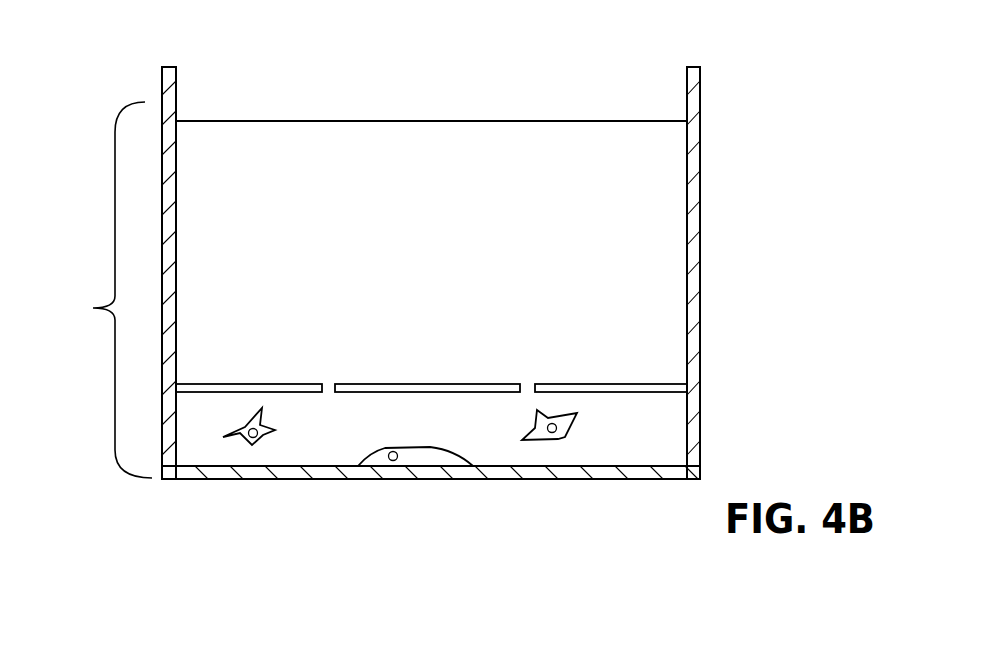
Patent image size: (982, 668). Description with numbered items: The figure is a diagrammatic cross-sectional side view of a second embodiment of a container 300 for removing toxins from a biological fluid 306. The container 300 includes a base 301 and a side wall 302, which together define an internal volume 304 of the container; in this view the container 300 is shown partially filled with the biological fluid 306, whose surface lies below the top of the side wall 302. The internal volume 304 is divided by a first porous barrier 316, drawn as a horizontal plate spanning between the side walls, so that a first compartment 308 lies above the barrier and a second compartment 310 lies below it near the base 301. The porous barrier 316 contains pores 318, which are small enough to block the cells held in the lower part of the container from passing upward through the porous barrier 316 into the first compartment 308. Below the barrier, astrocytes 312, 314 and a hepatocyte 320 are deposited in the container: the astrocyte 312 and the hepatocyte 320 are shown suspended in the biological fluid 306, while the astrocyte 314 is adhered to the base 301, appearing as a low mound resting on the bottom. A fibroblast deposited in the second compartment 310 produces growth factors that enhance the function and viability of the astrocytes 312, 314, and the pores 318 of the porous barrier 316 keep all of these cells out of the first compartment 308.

The container 300 is at (283, 75).
The base 301 is at (535, 479).
The side wall 302 is at (695, 242).
The internal volume 304 is at (96, 290).
The biological fluid 306 is at (408, 167).
The first compartment 308 is at (498, 232).
The second compartment 310 is at (318, 448).
The astrocyte 312 is at (565, 437).
The astrocyte 314 is at (418, 460).
The first porous barrier 316 is at (568, 384).
The pores 318 is at (520, 372).
The hepatocyte 320 is at (232, 441).